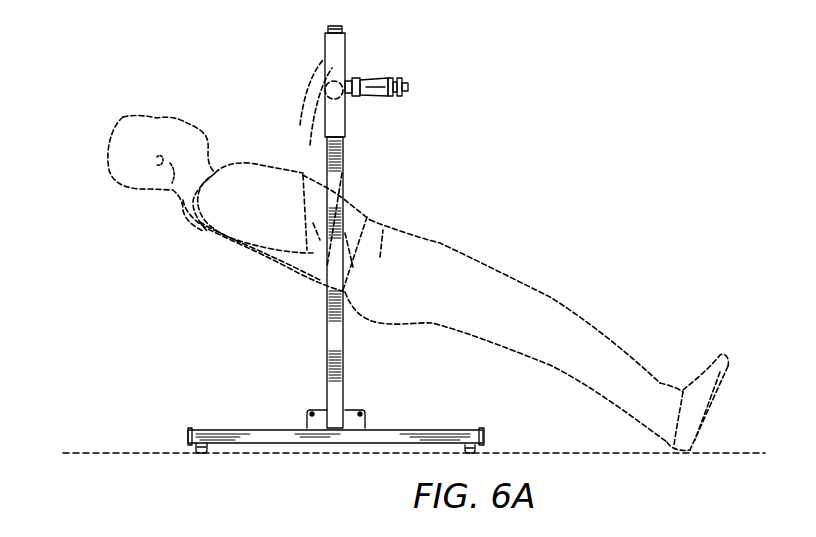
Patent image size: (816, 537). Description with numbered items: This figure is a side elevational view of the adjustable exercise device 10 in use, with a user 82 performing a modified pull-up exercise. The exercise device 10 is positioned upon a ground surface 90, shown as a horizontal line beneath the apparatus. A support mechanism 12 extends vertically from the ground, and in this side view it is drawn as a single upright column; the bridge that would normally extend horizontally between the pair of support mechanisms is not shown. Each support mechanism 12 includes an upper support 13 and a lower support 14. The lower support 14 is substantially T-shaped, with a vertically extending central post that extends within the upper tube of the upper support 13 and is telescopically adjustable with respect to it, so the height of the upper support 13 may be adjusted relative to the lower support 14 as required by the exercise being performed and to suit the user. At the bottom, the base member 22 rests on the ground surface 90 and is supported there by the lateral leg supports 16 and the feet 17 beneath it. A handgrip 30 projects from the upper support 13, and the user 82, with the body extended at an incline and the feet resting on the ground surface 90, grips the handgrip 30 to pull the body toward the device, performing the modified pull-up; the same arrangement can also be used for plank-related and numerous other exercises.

The adjustable exercise device 10 is at (278, 353).
The support mechanism 12 is at (328, 340).
The upper support 13 is at (345, 48).
The lower support 14 is at (345, 362).
The lateral leg support 16 is at (195, 452).
The foot 17 is at (208, 452).
The base member 22 is at (435, 428).
The handgrip 30 is at (362, 78).
The user 82 is at (557, 296).
The ground surface 90 is at (122, 452).